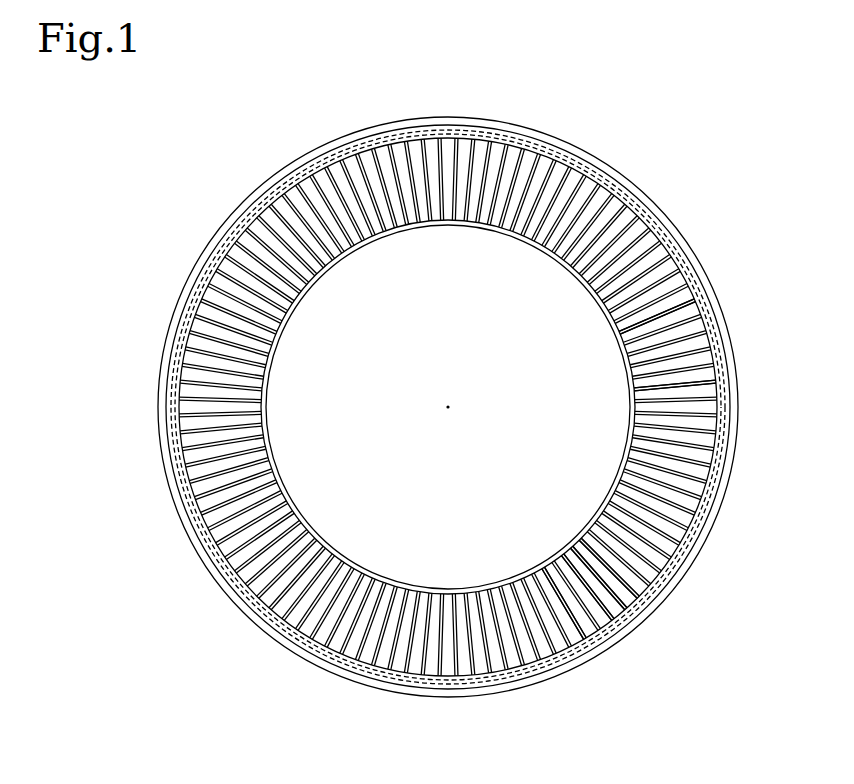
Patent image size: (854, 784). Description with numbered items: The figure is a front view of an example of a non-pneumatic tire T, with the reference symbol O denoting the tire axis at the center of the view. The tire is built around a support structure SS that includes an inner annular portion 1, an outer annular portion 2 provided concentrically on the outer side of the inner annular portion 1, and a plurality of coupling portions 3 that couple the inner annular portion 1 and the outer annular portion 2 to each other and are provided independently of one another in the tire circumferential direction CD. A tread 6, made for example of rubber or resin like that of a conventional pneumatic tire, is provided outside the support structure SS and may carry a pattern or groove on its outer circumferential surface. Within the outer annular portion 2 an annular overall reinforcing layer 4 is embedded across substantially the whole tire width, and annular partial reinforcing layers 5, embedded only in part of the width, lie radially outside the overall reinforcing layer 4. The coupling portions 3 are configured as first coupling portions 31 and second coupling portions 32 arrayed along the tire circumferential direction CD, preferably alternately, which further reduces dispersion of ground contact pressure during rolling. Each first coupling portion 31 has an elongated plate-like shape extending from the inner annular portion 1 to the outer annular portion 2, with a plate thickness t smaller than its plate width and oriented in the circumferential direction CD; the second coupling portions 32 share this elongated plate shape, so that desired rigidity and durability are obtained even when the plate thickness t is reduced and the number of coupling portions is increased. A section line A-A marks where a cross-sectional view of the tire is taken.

The non-pneumatic tire T is at (676, 200).
The inner annular portion 1 is at (600, 311).
The outer annular portion 2 is at (677, 303).
The coupling portions 3 is at (677, 392).
The support structure SS is at (552, 322).
The overall reinforcing layer 4 is at (718, 303).
The partial reinforcing layers 5 is at (730, 334).
The tread 6 is at (735, 367).
The first coupling portions 31 is at (613, 605).
The second coupling portions 32 is at (628, 597).
The axis O is at (436, 408).
The tire circumferential direction CD is at (765, 378).
The line A- A is at (542, 563).
The plate thickness t is at (504, 668).